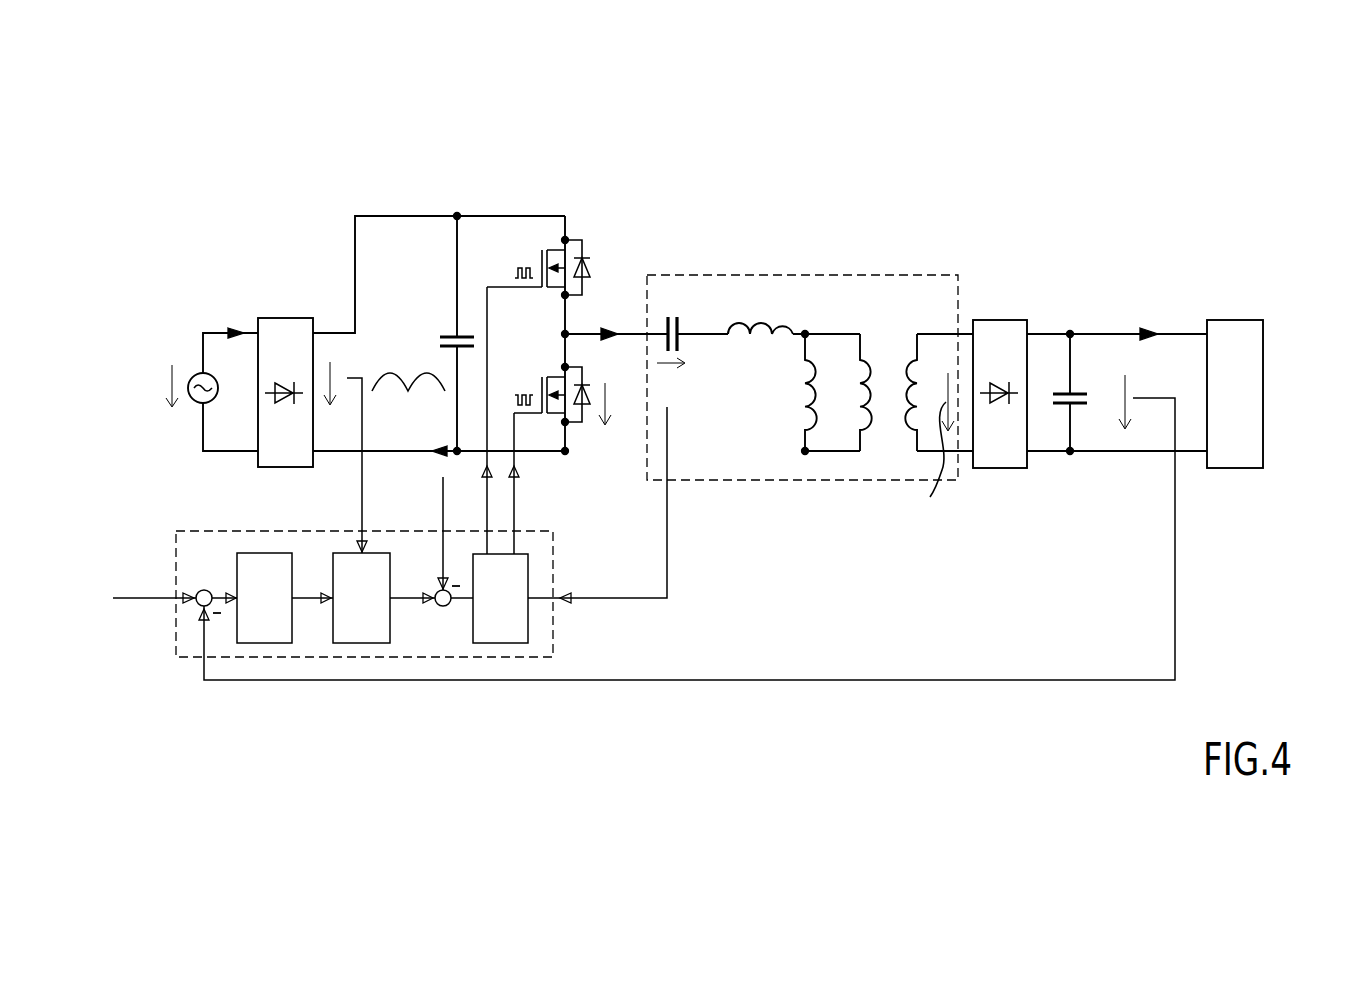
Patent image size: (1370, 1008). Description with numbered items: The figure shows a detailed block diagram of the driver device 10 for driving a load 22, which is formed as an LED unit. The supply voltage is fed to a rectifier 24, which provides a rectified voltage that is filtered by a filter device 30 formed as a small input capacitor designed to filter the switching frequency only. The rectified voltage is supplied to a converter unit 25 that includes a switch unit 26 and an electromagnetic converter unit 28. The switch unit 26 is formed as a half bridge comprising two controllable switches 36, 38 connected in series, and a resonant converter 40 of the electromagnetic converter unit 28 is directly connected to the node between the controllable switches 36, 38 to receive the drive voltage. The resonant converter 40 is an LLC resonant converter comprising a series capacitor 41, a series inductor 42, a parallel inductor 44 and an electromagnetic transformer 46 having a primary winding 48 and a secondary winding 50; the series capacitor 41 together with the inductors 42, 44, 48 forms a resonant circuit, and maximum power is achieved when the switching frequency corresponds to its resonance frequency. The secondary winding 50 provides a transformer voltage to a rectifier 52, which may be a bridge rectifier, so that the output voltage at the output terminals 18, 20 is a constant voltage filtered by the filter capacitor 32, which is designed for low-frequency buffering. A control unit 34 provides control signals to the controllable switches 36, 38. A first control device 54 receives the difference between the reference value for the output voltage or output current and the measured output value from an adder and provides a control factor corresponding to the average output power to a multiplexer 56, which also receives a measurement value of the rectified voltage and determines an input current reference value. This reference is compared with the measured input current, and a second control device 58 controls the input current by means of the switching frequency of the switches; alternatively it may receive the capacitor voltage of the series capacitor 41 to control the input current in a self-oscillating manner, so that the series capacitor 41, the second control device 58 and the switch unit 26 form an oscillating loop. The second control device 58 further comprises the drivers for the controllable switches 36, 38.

The driver device 10 is at (884, 152).
The output terminal 18 is at (1069, 332).
The output terminal 20 is at (1070, 455).
The load 22 is at (1233, 334).
The rectifier 24 is at (285, 342).
The converter unit 25 is at (667, 112).
The switch unit 26 is at (565, 195).
The electromagnetic converter unit 28 is at (795, 275).
The filter device 30 is at (446, 337).
The filter capacitor 32 is at (1083, 390).
The control unit 34 is at (178, 534).
The controllable switch 36 is at (562, 250).
The controllable switch 38 is at (562, 378).
The resonant converter 40 is at (716, 218).
The series capacitor 41 is at (668, 314).
The series inductor 42 is at (764, 318).
The parallel inductor 44 is at (815, 393).
The electromagnetic transformer 46 is at (889, 262).
The primary winding 48 is at (873, 362).
The secondary winding 50 is at (920, 362).
The rectifier 52 is at (1008, 332).
The first control device 54 is at (262, 565).
The multiplexer 56 is at (361, 625).
The second control device 58 is at (495, 625).